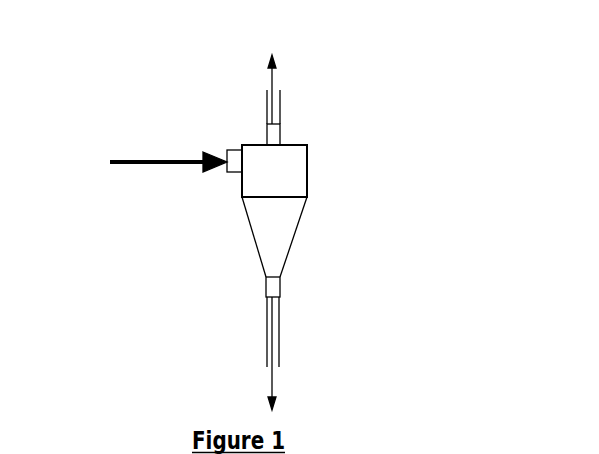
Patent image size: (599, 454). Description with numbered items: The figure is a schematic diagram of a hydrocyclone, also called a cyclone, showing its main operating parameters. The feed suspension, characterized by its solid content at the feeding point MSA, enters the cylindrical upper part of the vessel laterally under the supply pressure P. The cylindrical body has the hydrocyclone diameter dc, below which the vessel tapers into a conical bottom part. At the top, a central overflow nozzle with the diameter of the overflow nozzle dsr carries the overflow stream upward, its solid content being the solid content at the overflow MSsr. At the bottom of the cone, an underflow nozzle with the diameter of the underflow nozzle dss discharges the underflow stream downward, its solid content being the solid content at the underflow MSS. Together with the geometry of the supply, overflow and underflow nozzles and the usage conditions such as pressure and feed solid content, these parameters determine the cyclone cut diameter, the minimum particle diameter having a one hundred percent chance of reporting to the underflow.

The hydrocyclone diameter dc is at (242, 145).
The diameter of the overflow nozzle dsr is at (302, 101).
The diameter of the underflow nozzle dss is at (232, 367).
The solid content at the feeding point MSA is at (163, 143).
The solid content at the overflow MSsr is at (320, 103).
The solid content at the underflow MSS is at (234, 353).
The supply pressure P is at (203, 182).